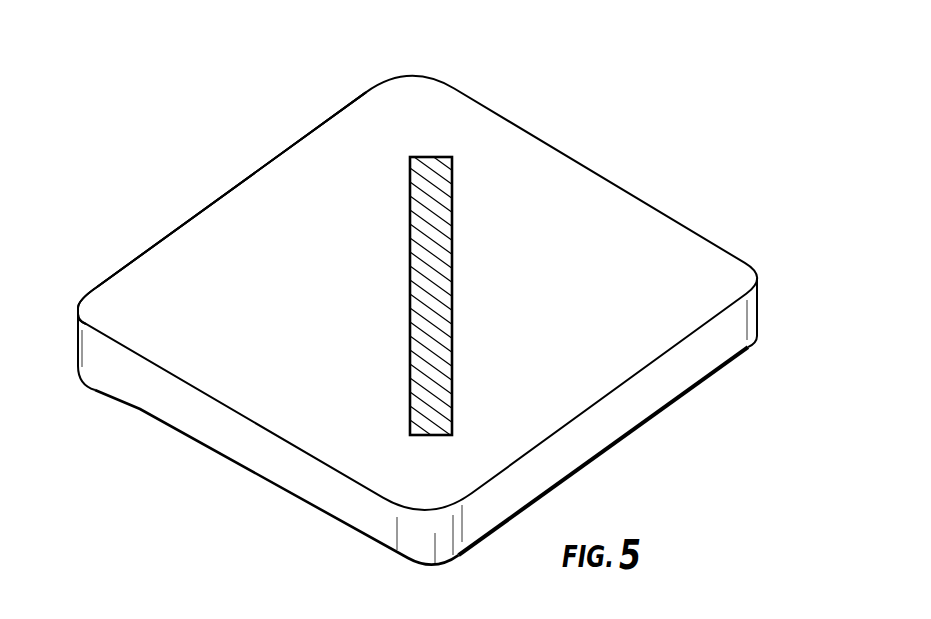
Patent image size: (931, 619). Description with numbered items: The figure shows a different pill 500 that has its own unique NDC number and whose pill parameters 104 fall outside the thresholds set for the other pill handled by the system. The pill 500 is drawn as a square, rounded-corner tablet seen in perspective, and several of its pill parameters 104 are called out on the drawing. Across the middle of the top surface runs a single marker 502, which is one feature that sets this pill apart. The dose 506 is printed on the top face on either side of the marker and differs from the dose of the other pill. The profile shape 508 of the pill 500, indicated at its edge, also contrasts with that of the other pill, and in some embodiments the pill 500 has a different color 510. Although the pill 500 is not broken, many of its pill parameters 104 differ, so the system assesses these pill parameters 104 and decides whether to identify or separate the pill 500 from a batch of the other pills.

The pill 500 is at (420, 282).
The color 510 is at (206, 122).
The pill parameters 104 is at (124, 208).
The marker 502 is at (433, 161).
The dose 506 is at (576, 182).
The profile shape 508 is at (764, 216).